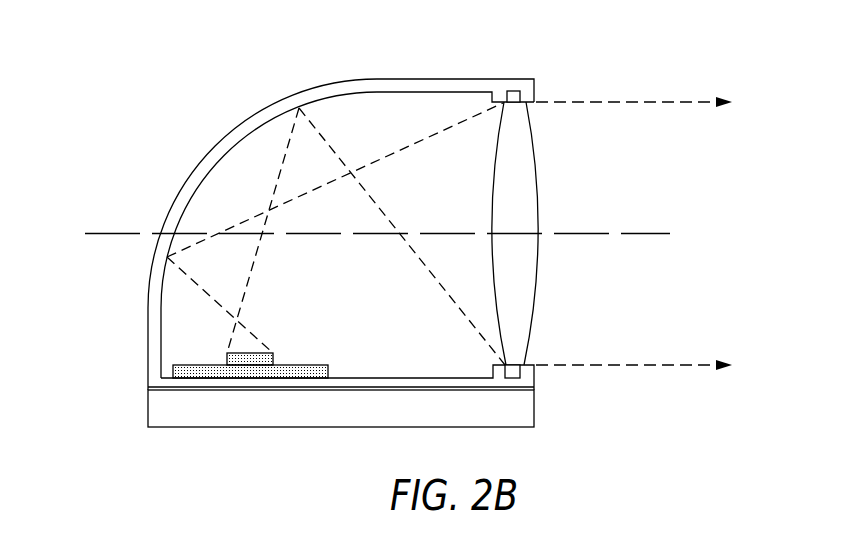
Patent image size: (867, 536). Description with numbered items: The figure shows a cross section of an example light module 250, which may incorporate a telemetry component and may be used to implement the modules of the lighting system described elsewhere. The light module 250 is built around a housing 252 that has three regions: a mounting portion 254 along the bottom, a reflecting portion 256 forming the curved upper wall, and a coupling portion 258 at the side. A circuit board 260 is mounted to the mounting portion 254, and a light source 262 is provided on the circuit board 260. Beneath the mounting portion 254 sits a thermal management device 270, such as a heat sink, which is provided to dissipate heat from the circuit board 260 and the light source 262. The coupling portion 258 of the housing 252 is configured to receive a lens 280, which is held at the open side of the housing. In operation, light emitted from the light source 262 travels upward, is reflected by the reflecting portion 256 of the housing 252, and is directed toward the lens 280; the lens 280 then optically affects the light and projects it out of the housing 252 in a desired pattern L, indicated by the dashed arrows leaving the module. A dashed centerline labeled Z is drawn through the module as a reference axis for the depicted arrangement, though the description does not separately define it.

The light module 250 is at (92, 27).
The housing 252 is at (309, 89).
The mounting portion 254 is at (394, 380).
The reflecting portion 256 is at (508, 79).
The coupling portion 258 is at (208, 176).
The circuit board 260 is at (340, 340).
The light source 262 is at (226, 360).
The thermal management device 270 is at (148, 410).
The lens 280 is at (541, 271).
The optical axis Z is at (102, 234).
The desired pattern L is at (644, 237).